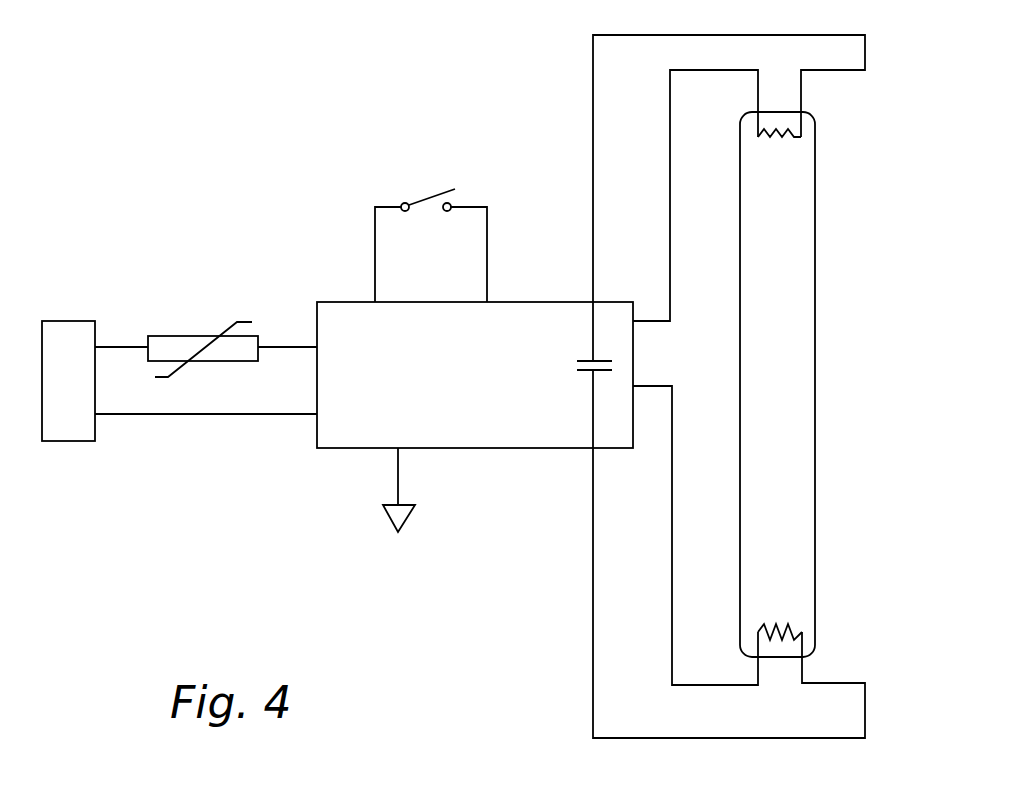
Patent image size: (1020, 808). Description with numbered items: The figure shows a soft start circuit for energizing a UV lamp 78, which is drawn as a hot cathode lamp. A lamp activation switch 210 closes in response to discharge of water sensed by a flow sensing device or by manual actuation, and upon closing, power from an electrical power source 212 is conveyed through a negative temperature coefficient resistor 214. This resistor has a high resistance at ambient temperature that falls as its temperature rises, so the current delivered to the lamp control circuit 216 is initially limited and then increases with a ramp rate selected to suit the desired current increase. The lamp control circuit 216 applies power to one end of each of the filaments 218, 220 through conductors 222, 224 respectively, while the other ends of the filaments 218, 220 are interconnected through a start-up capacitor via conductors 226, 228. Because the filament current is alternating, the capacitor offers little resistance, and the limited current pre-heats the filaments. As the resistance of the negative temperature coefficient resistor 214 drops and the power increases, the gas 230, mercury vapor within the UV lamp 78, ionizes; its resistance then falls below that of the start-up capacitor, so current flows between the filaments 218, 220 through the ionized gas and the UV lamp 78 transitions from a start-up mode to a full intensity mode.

The UV lamp 78 is at (815, 517).
The lamp activation switch 210 is at (468, 203).
The electrical power source 212 is at (68, 320).
The negative temperature coefficient resistor 214 is at (260, 335).
The lamp control circuit 216 is at (345, 450).
The filament 218 is at (790, 628).
The filament 220 is at (785, 138).
The conductor 222 is at (673, 510).
The conductor 224 is at (670, 272).
The conductor 226 is at (594, 586).
The conductor 228 is at (593, 222).
The gas 230 is at (786, 448).